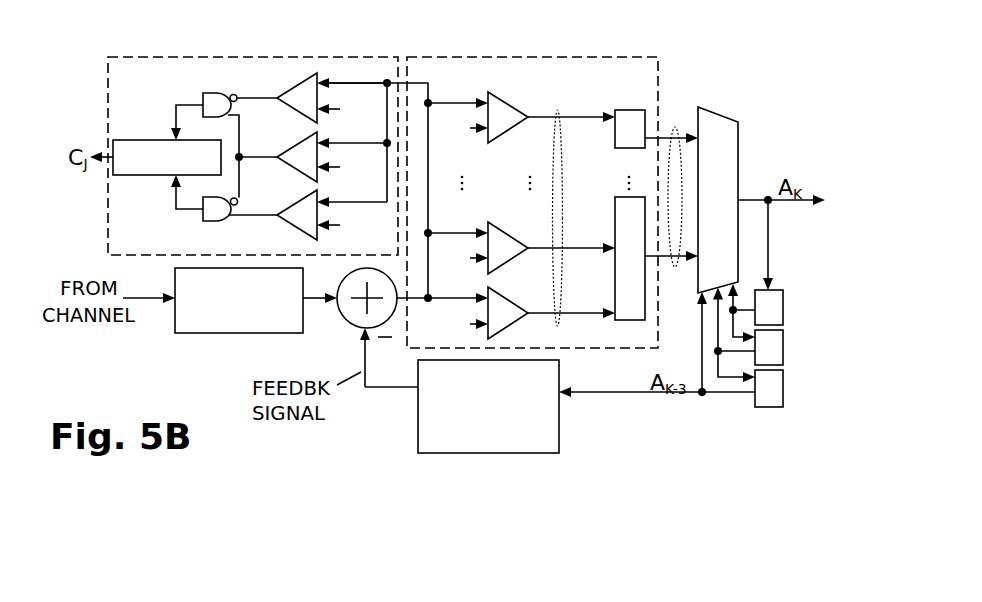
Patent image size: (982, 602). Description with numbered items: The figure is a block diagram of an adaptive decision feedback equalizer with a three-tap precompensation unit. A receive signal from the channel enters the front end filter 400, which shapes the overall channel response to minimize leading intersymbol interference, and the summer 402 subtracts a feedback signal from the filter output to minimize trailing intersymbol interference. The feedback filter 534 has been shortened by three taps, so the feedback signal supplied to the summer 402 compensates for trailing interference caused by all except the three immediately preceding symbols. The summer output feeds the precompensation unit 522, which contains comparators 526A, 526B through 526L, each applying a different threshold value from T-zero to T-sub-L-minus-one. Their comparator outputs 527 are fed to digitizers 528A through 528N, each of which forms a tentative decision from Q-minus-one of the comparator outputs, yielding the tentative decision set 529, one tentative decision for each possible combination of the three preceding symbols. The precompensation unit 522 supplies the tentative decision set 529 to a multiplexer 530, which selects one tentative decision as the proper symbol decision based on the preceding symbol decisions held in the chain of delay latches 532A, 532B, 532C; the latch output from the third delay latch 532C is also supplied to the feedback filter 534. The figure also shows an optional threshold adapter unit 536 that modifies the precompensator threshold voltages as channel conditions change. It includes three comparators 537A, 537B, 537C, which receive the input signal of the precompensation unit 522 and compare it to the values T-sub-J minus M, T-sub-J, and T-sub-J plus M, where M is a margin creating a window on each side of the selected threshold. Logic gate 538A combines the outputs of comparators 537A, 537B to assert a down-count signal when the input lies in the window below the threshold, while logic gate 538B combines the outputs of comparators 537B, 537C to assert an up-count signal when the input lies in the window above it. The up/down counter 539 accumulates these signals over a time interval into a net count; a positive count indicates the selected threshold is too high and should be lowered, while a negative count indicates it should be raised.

The front end filter 400 is at (222, 334).
The summer 402 is at (347, 329).
The precompensation unit 522 is at (452, 57).
The comparator 526A is at (506, 298).
The comparator 526B is at (506, 233).
The comparator 526L is at (506, 103).
The comparator outputs 527 is at (557, 110).
The digitizer 528A is at (615, 197).
The digitizer 528N is at (615, 110).
The tentative decision set 529 is at (674, 127).
The multiplexer 530 is at (738, 121).
The delay latch 532A is at (783, 303).
The delay latch 532B is at (783, 343).
The delay latch 532C is at (783, 383).
The feedback filter 534 is at (418, 426).
The threshold adapter unit 536 is at (157, 57).
The comparator 537A is at (300, 201).
The comparator 537B is at (300, 143).
The comparator 537C is at (300, 84).
The logic gate 538A is at (214, 221).
The logic gate 538B is at (214, 93).
The up/down counter 539 is at (140, 140).